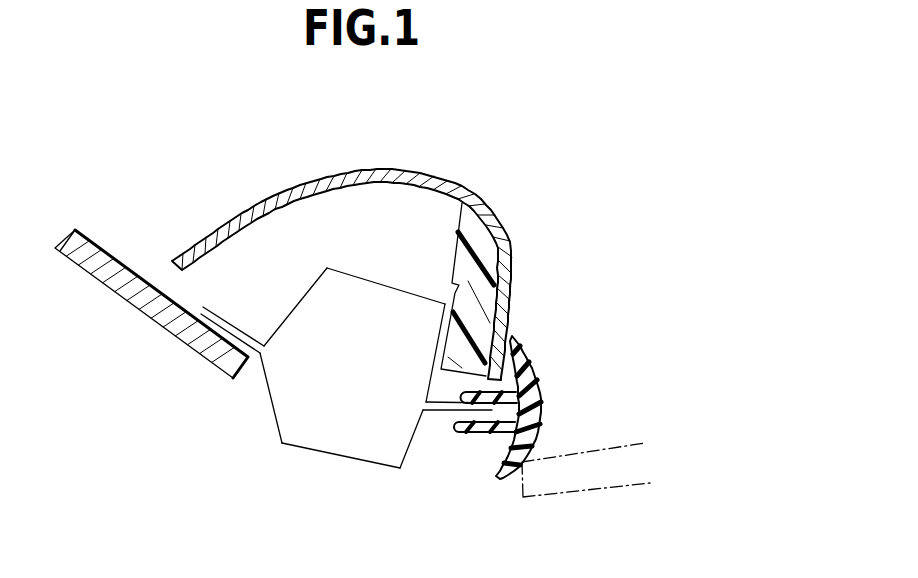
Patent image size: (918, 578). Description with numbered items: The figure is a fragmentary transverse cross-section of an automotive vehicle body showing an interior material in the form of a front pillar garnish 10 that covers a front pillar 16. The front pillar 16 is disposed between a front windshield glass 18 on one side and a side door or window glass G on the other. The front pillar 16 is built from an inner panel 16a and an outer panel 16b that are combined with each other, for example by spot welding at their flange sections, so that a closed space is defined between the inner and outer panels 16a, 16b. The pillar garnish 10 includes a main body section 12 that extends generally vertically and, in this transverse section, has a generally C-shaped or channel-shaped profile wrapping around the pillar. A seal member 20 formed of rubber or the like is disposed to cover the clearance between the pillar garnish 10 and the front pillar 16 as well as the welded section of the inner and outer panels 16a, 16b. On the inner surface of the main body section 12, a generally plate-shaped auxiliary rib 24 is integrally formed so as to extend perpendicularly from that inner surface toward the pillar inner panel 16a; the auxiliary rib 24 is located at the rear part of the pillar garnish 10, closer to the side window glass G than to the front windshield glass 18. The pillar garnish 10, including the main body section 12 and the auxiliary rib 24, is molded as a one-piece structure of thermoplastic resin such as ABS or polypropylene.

The front pillar garnish 10 is at (391, 304).
The main body section 12 is at (413, 170).
The front pillar 16 is at (346, 402).
The inner panel 16a is at (370, 286).
The outer panel 16b is at (367, 466).
The front windshield glass 18 is at (150, 321).
The seal member 20 is at (527, 413).
The auxiliary rib 24 is at (487, 256).
The side window glass G is at (543, 498).